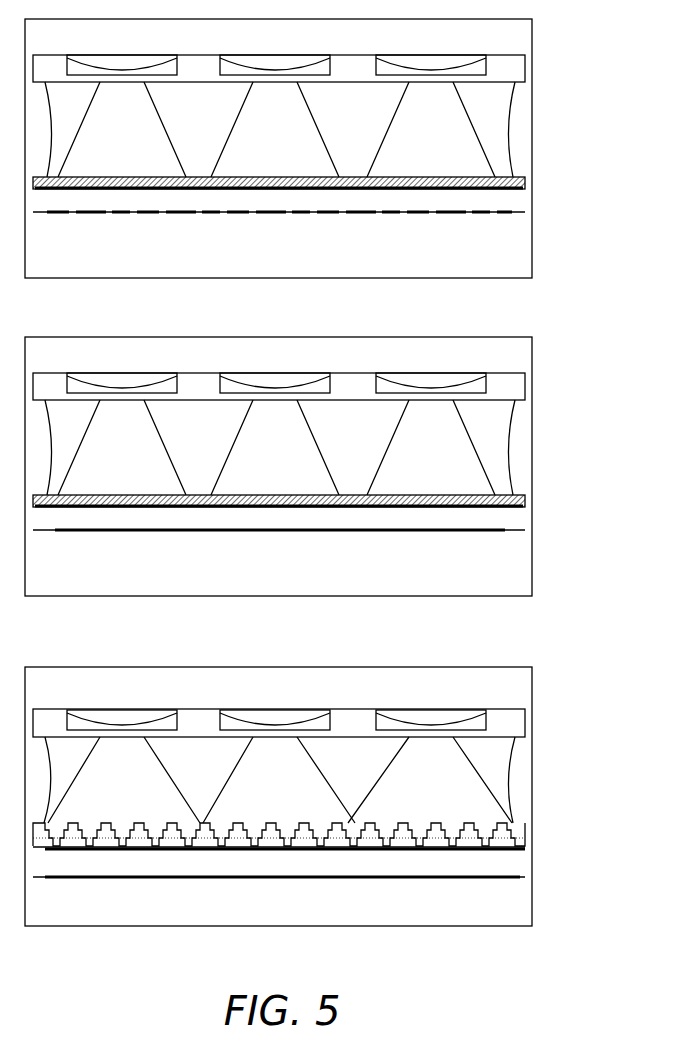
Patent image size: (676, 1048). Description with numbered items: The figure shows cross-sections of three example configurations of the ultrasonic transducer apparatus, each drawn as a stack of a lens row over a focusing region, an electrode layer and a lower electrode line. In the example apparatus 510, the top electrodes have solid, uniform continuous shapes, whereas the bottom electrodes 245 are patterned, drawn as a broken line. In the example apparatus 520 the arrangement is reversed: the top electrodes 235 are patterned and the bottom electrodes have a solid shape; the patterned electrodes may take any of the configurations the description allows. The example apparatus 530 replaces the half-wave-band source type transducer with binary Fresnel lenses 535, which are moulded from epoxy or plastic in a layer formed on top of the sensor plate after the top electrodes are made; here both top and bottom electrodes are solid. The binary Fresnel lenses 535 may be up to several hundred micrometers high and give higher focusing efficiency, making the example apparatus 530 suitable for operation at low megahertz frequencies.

The example apparatus 510 is at (552, 28).
The example apparatus 520 is at (552, 346).
The example apparatus 530 is at (552, 676).
The top electrodes 235 is at (432, 496).
The bottom electrodes 245 is at (430, 215).
The binary Fresnel lenses 535 is at (352, 822).